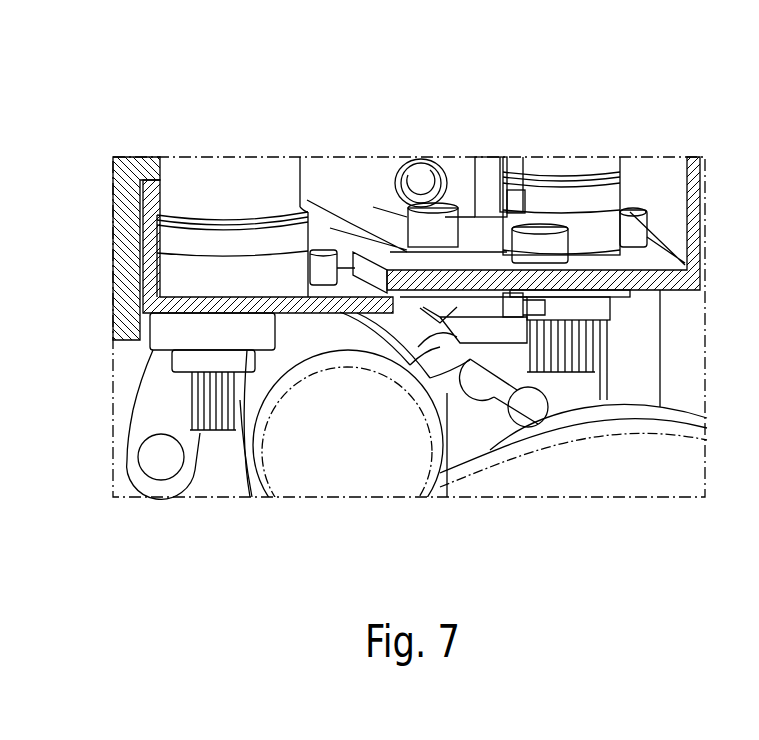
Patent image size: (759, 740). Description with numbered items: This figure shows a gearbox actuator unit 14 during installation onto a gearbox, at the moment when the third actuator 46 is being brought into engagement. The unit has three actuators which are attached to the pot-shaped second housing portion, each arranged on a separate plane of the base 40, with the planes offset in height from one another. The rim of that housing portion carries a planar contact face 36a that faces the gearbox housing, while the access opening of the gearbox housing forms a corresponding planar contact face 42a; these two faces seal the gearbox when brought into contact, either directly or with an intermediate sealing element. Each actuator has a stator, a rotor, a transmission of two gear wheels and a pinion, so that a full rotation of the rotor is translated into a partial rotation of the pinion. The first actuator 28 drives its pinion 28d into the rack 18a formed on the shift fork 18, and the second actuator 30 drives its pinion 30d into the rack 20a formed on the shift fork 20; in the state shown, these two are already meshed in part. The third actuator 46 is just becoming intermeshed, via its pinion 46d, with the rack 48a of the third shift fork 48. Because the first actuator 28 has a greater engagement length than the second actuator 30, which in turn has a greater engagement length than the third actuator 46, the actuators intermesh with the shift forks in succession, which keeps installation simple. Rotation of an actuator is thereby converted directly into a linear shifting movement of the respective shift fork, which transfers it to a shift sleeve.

The gearbox actuator unit 14 is at (327, 138).
The shift fork 18 is at (400, 322).
The rack 18a is at (510, 330).
The shift fork 20 is at (430, 320).
The rack 20a is at (553, 380).
The first actuator 28 is at (353, 168).
The pinion 28d is at (502, 283).
The second actuator 30 is at (571, 203).
The pinion 30d is at (607, 400).
The contact face 36a is at (160, 190).
The base 40 is at (346, 313).
The contact face 42a is at (128, 182).
The third actuator 46 is at (253, 192).
The pinion 46d is at (205, 388).
The third shift fork 48 is at (113, 467).
The rack 48a is at (200, 433).